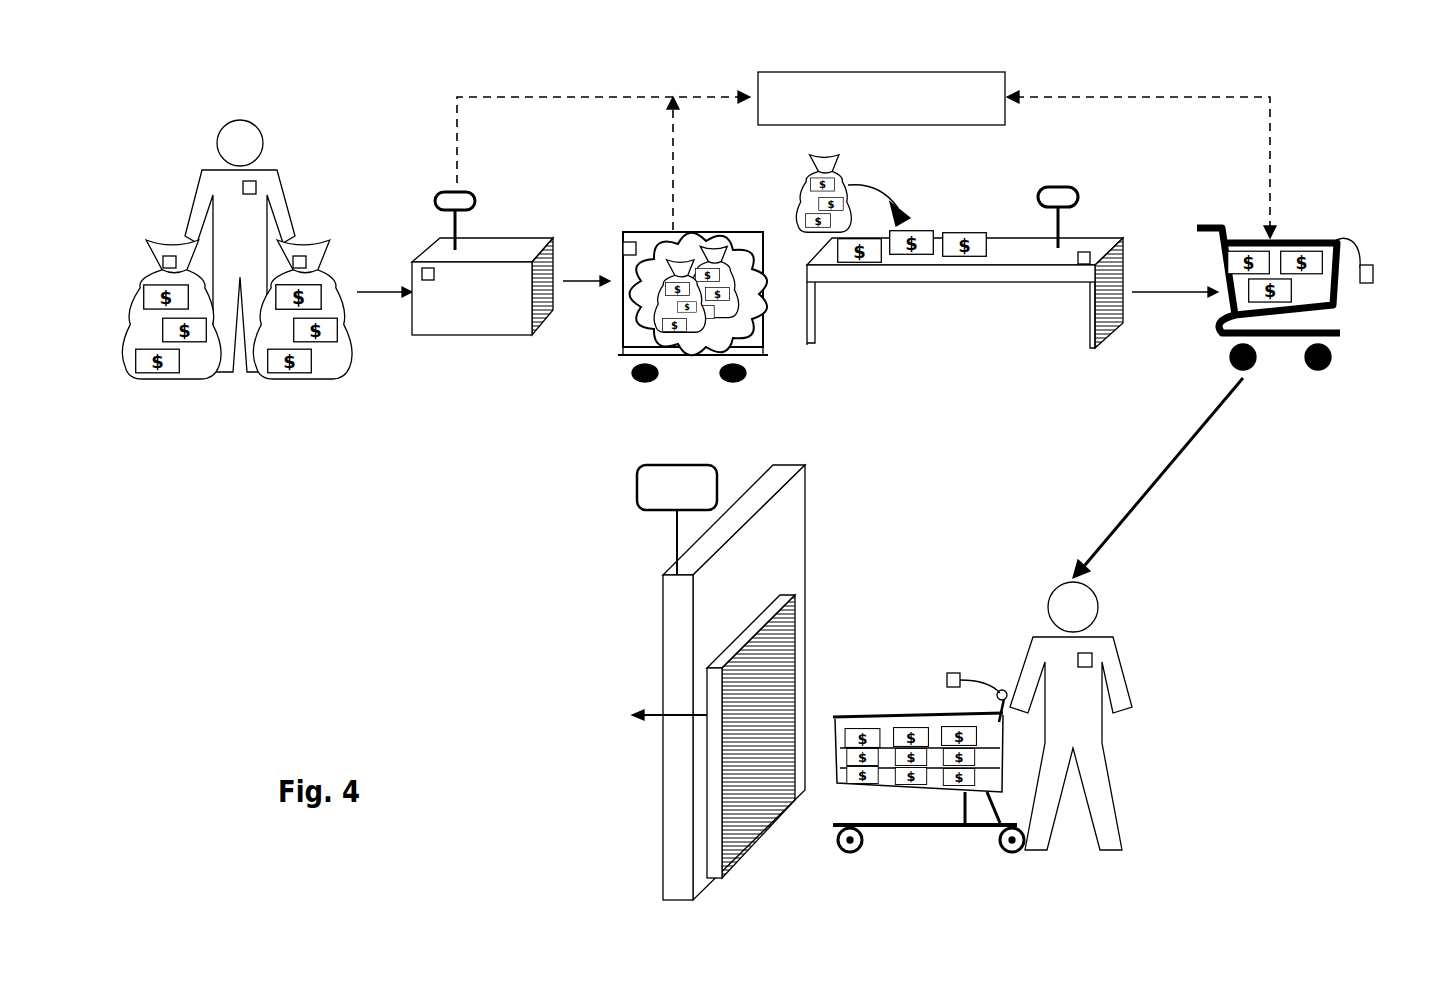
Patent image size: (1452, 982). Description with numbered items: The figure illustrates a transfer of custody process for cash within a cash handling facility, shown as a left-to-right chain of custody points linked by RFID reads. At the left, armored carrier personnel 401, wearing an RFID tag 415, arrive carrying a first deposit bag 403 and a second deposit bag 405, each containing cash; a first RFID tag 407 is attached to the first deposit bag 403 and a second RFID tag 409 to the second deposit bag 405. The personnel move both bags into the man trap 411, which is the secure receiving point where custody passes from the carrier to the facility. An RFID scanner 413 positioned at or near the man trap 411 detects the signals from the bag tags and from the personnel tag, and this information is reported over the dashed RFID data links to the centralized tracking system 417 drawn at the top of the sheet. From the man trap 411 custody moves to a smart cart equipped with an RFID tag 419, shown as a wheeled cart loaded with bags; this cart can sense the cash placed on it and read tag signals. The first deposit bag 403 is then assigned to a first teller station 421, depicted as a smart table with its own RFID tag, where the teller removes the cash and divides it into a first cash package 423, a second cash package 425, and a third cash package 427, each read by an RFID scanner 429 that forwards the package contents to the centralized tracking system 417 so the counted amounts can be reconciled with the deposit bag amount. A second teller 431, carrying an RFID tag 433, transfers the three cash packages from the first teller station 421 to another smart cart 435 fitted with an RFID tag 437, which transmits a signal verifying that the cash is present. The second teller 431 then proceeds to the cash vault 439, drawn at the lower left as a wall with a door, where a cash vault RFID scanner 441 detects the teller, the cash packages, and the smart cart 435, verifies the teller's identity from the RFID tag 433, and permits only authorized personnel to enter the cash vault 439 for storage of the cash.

The armored carrier personnel 401 is at (225, 152).
The first deposit bag 403 is at (192, 380).
The second deposit bag 405 is at (313, 378).
The first RFID tag 407 is at (160, 256).
The second RFID tag 409 is at (304, 258).
The man trap 411 is at (477, 333).
The RFID scanner 413 is at (462, 197).
The RFID tag 415 is at (258, 187).
The centralized tracking system 417 is at (773, 128).
The RFID tag 419 is at (635, 243).
The first teller station 421 is at (1007, 256).
The first cash package 423 is at (862, 264).
The second cash package 425 is at (907, 256).
The third cash package 427 is at (968, 258).
The RFID scanner 429 is at (1117, 167).
The second teller 431 is at (1048, 607).
The RFID tag 433 is at (1093, 656).
The smart cart 435 is at (1300, 322).
The RFID tag 437 is at (1373, 268).
The cash vault 439 is at (670, 672).
The cash vault RFID scanner 441 is at (655, 510).